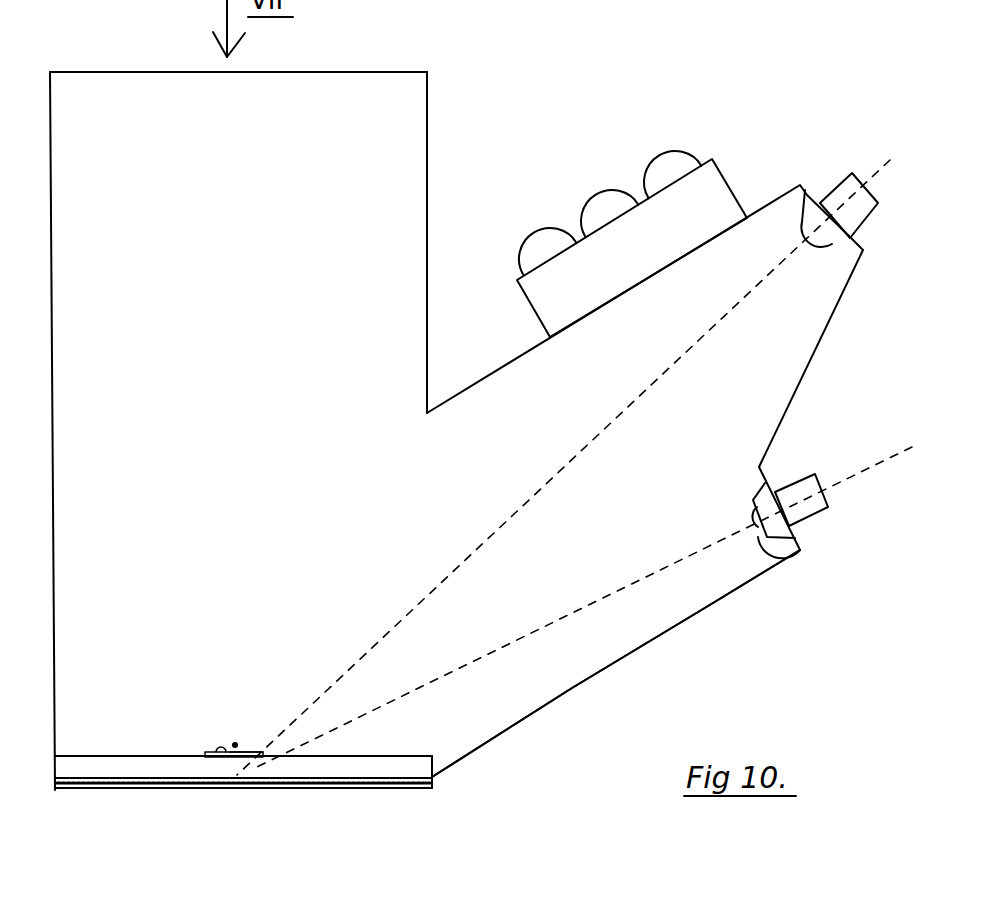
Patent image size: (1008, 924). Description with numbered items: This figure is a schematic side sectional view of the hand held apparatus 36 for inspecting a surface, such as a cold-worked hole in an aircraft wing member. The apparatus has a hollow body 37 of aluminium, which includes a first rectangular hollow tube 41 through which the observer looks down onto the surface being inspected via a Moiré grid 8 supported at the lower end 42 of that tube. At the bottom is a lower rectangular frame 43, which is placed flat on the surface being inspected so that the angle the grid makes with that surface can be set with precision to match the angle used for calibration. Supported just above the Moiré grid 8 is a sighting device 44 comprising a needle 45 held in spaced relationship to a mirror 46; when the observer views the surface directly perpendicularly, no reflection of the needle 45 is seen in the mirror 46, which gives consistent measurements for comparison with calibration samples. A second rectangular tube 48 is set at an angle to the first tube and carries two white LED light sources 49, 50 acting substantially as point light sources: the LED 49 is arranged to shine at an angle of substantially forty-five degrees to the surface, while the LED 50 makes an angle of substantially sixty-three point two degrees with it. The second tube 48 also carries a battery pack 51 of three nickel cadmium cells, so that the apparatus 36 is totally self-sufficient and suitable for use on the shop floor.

The Moiré grid 8 is at (343, 788).
The hand held apparatus 36 is at (430, 195).
The hollow body 37 is at (428, 135).
The first rectangular hollow tube 41 is at (152, 72).
The lower end 42 is at (413, 790).
The lower rectangular frame 43 is at (433, 780).
The sighting device 44 is at (218, 740).
The needle 45 is at (238, 745).
The mirror 46 is at (222, 750).
The second rectangular tube 48 is at (713, 603).
The LED light source 49 is at (825, 245).
The LED light source 50 is at (778, 557).
The battery pack 51 is at (615, 190).